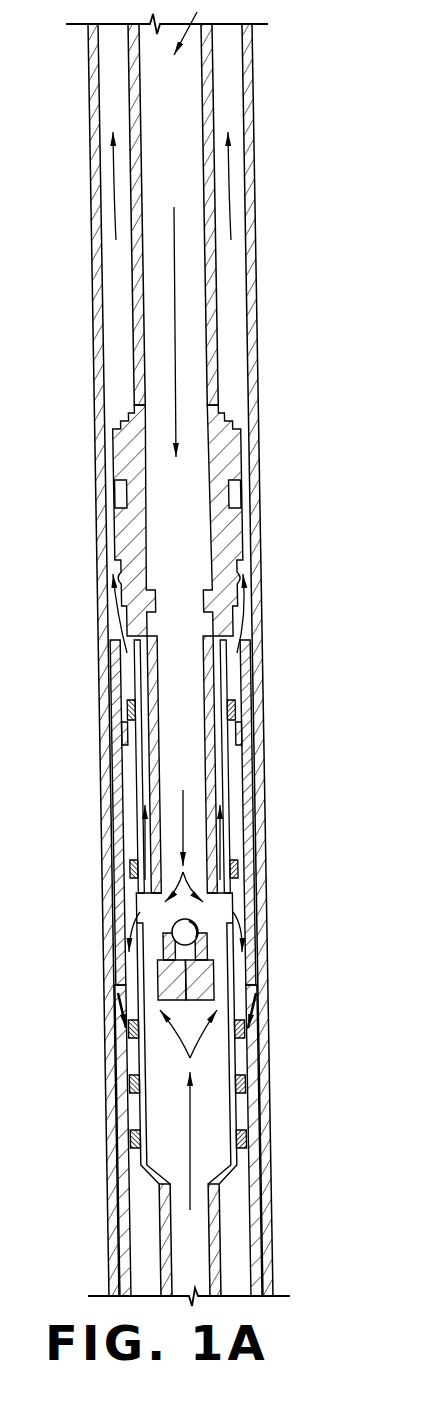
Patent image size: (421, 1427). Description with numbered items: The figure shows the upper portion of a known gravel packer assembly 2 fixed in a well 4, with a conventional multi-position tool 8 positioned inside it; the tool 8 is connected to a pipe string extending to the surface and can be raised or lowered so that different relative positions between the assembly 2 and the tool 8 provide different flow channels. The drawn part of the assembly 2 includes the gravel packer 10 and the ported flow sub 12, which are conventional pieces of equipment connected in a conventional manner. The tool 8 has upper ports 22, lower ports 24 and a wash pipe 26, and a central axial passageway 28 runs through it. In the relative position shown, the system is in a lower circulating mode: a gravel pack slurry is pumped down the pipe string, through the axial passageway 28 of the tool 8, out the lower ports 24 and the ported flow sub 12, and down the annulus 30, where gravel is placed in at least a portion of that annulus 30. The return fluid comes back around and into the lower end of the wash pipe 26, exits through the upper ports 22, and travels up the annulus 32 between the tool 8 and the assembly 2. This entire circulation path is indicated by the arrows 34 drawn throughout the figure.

The gravel packer assembly 2 is at (258, 867).
The well 4 is at (124, 874).
The tool 8 is at (240, 424).
The gravel packer 10 is at (254, 705).
The ported flow sub 12 is at (262, 1084).
The upper ports 22 is at (132, 673).
The lower ports 24 is at (147, 903).
The wash pipe 26 is at (216, 1209).
The axial passageway 28 is at (201, 27).
The annulus 30 is at (263, 1267).
The annulus 32 is at (233, 327).
The arrows 34 is at (116, 183).